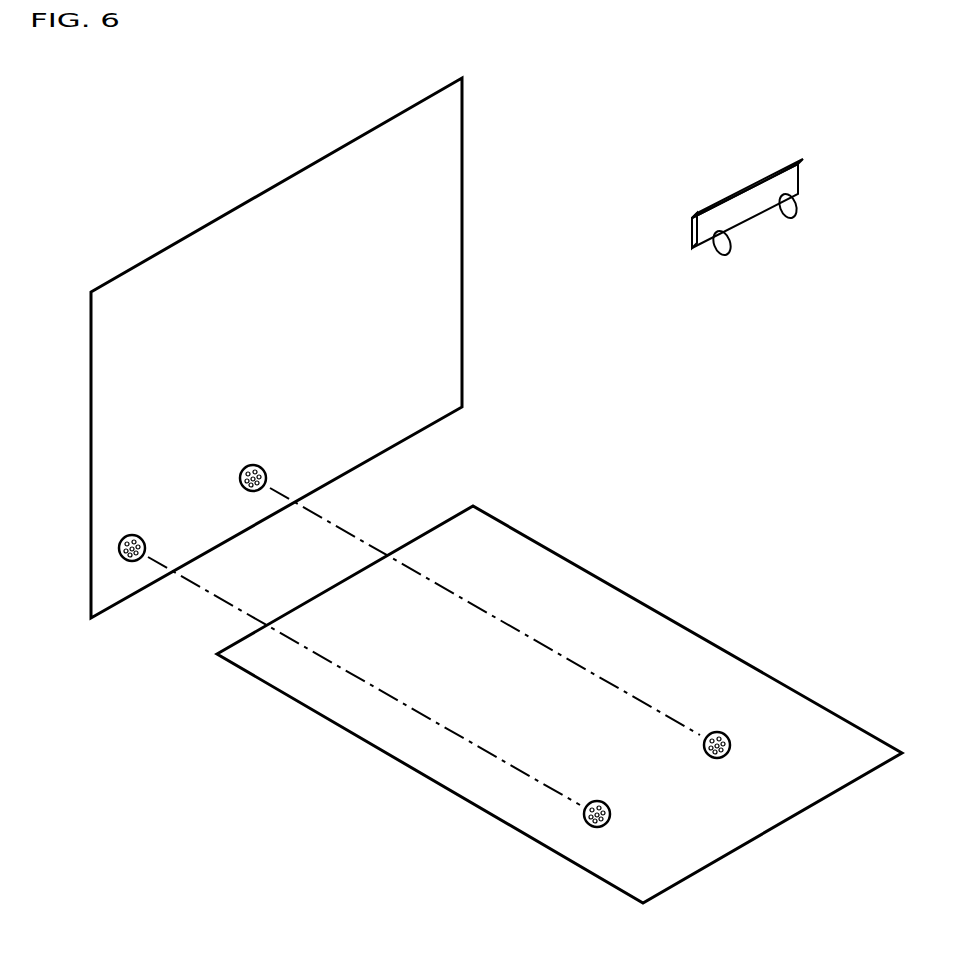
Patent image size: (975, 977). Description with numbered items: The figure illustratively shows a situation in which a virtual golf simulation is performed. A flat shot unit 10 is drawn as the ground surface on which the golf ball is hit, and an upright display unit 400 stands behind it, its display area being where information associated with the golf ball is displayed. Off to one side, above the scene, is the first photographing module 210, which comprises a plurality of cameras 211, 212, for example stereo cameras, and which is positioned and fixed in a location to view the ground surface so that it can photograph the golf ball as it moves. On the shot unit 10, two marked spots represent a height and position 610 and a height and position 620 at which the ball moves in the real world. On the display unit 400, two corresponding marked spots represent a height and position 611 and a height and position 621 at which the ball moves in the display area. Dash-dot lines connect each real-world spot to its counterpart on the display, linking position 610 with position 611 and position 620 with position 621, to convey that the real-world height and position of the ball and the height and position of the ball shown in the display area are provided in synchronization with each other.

The shot unit 10 is at (443, 788).
The display unit 400 is at (265, 192).
The first photographing module 210 is at (785, 194).
The camera 211 is at (731, 244).
The camera 212 is at (797, 207).
The height and position at which the ball moves in the real world 610 is at (585, 824).
The height and position at which the ball moves in the display area 611 is at (120, 552).
The height and position at which the ball moves in the real world 620 is at (721, 733).
The height and position at which the ball moves in the display area 621 is at (264, 470).